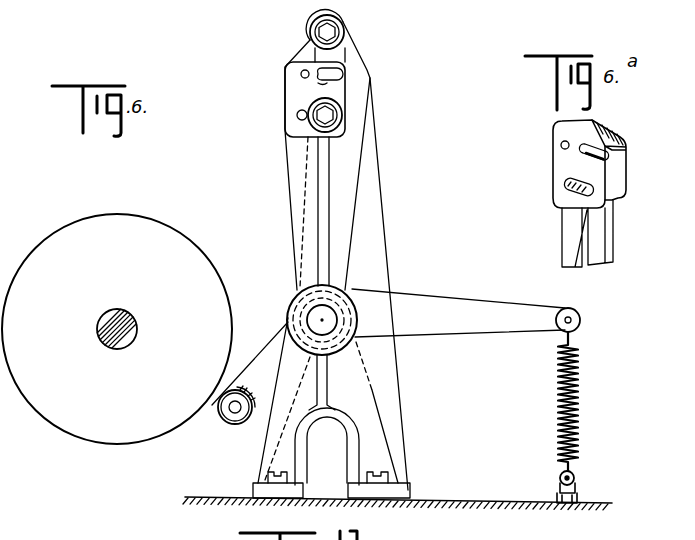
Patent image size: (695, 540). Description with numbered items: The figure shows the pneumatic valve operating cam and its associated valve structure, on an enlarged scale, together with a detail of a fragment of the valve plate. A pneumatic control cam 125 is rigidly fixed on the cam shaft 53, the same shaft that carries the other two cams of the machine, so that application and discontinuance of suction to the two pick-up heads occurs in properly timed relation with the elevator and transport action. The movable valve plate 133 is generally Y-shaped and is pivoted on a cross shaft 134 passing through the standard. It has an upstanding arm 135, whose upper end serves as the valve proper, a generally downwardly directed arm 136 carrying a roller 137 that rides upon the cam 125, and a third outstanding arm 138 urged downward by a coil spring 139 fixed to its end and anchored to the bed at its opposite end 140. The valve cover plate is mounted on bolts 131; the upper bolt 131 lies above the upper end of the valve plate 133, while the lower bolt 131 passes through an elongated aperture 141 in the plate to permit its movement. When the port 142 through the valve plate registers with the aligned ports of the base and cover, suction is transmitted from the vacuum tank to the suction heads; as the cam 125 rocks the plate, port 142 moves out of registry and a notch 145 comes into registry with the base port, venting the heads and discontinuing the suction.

In FIG. 6, the cam shaft 53 is at (120, 307).
In FIG. 6, the pneumatic control cam 125 is at (67, 418).
In FIG. 6, the bolts 131 is at (317, 32).
In FIG. 6, the movable valve plate 133 is at (287, 95).
In FIG. 6a, the movable valve plate 133 is at (620, 177).
In FIG. 6, the cross shaft 134 is at (325, 320).
In FIG. 6, the upstanding arm 135 is at (318, 192).
In FIG. 6a, the upstanding arm 135 is at (613, 243).
In FIG. 6, the downwardly directed arm 136 is at (263, 349).
In FIG. 6, the roller 137 is at (228, 427).
In FIG. 6, the outstanding arm 138 is at (473, 303).
In FIG. 6, the coil spring 139 is at (576, 402).
In FIG. 6, the anchor end 140 is at (574, 478).
In FIG. 6, the elongated aperture 141 is at (300, 115).
In FIG. 6a, the elongated aperture 141 is at (564, 185).
In FIG. 6, the port 142 is at (302, 73).
In FIG. 6a, the port 142 is at (562, 145).
In FIG. 6, the notch 145 is at (340, 75).
In FIG. 6a, the notch 145 is at (607, 157).